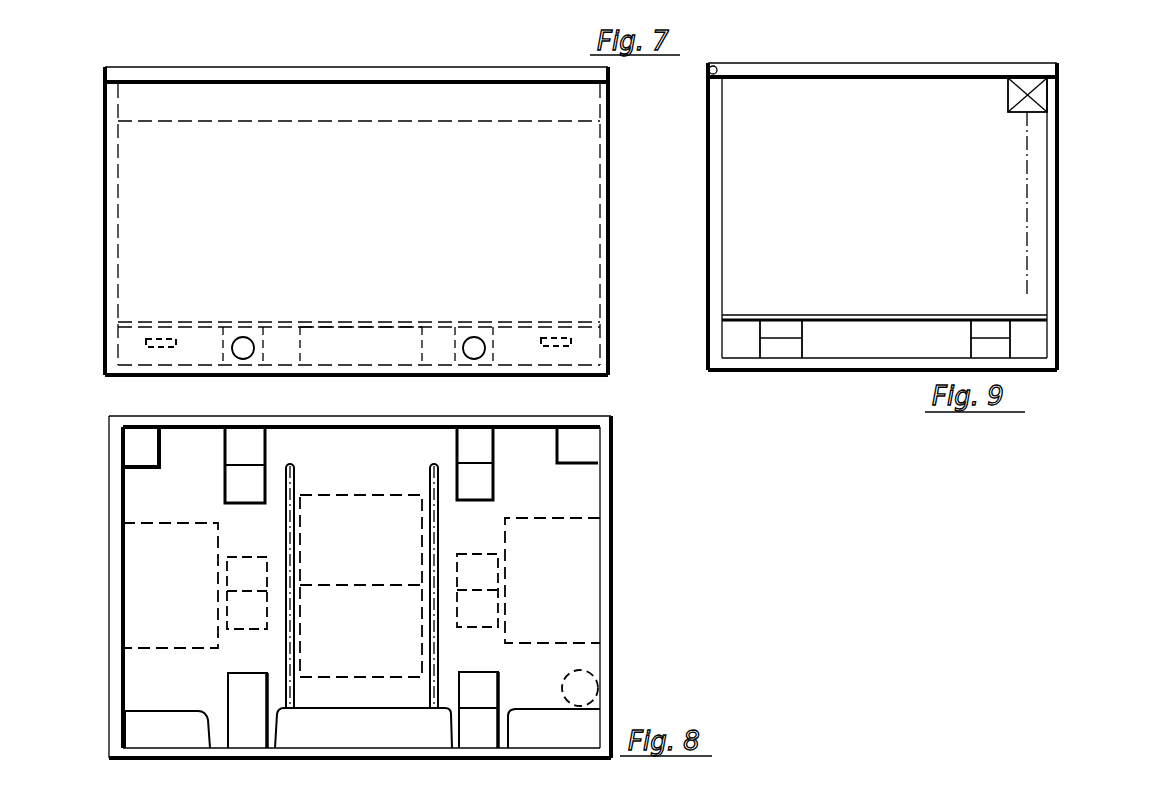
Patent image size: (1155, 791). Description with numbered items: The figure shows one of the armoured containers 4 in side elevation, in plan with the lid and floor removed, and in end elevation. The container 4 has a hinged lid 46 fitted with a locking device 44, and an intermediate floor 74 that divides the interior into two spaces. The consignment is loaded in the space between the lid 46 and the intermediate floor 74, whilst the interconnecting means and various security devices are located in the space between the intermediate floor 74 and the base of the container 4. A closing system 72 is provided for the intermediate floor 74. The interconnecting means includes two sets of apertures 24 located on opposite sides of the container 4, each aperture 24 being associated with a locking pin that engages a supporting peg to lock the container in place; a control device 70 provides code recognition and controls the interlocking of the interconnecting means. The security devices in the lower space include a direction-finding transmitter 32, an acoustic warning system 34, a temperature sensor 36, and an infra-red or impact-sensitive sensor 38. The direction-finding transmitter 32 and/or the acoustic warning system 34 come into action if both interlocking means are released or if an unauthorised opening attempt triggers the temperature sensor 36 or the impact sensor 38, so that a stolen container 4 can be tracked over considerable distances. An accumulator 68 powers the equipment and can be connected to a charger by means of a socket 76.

In FIG. 7, the armoured container 4 is at (617, 212).
In FIG. 9, the armoured container 4 is at (660, 176).
In FIG. 8, the armoured container 4 is at (624, 583).
In FIG. 7, the apertures 24 is at (253, 350).
In FIG. 8, the apertures 24 is at (480, 440).
In FIG. 8, the direction-finding transmitter 32 is at (250, 619).
In FIG. 8, the acoustic warning system 34 is at (471, 566).
In FIG. 8, the temperature sensor 36 is at (470, 616).
In FIG. 8, the infra-red or impact-sensitive sensor 38 is at (256, 569).
In FIG. 9, the locking device 44 is at (1037, 91).
In FIG. 7, the hinged lid 46 is at (315, 79).
In FIG. 9, the hinged lid 46 is at (883, 74).
In FIG. 8, the accumulator 68 is at (580, 544).
In FIG. 7, the control device 70 is at (380, 333).
In FIG. 8, the control device 70 is at (361, 586).
In FIG. 8, the closing system 72 is at (133, 437).
In FIG. 7, the intermediate floor 74 is at (305, 322).
In FIG. 9, the intermediate floor 74 is at (873, 320).
In FIG. 8, the socket 76 is at (590, 691).